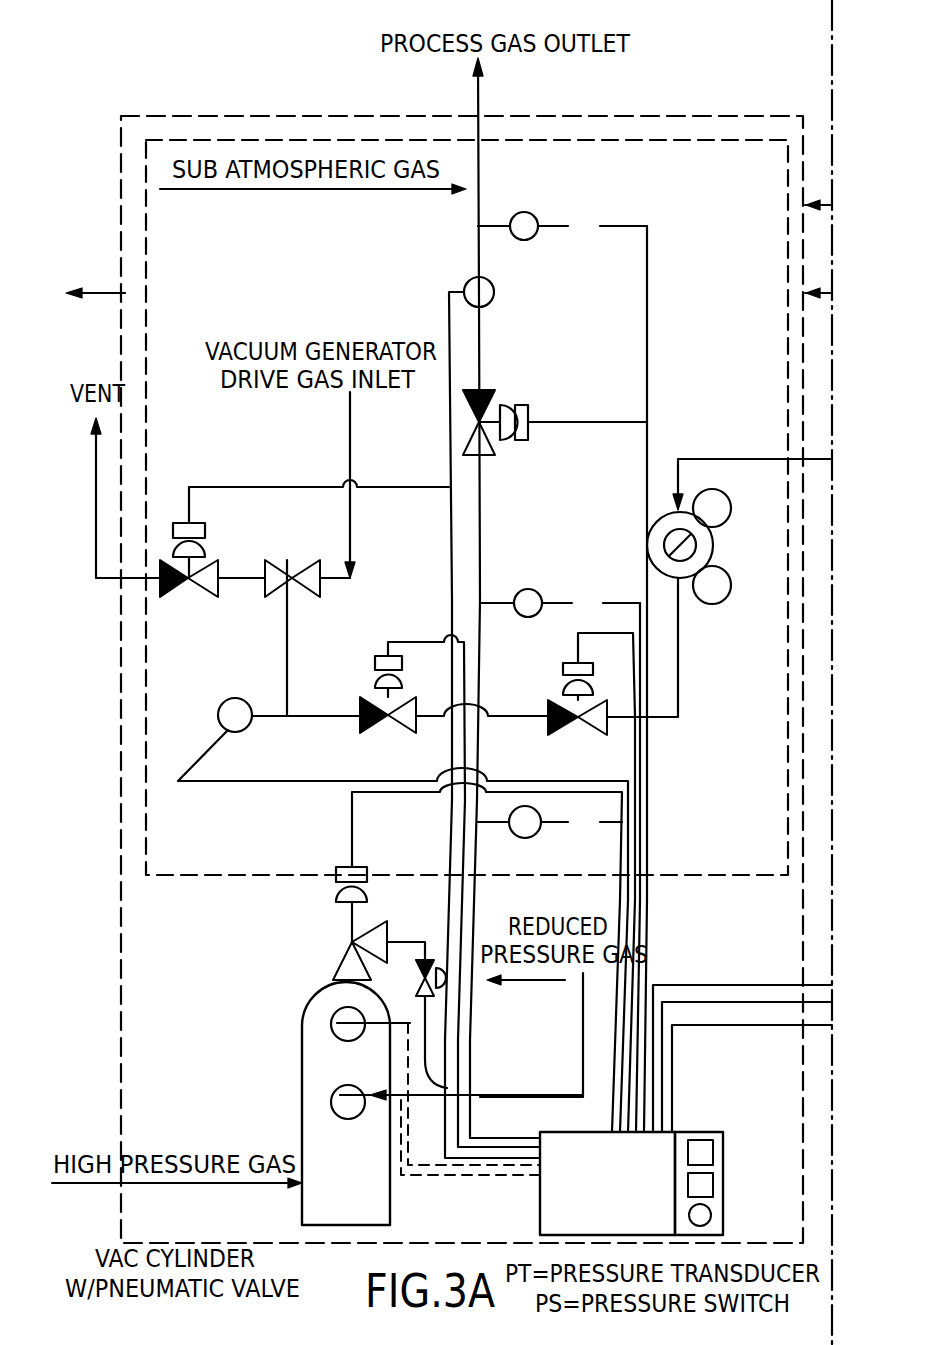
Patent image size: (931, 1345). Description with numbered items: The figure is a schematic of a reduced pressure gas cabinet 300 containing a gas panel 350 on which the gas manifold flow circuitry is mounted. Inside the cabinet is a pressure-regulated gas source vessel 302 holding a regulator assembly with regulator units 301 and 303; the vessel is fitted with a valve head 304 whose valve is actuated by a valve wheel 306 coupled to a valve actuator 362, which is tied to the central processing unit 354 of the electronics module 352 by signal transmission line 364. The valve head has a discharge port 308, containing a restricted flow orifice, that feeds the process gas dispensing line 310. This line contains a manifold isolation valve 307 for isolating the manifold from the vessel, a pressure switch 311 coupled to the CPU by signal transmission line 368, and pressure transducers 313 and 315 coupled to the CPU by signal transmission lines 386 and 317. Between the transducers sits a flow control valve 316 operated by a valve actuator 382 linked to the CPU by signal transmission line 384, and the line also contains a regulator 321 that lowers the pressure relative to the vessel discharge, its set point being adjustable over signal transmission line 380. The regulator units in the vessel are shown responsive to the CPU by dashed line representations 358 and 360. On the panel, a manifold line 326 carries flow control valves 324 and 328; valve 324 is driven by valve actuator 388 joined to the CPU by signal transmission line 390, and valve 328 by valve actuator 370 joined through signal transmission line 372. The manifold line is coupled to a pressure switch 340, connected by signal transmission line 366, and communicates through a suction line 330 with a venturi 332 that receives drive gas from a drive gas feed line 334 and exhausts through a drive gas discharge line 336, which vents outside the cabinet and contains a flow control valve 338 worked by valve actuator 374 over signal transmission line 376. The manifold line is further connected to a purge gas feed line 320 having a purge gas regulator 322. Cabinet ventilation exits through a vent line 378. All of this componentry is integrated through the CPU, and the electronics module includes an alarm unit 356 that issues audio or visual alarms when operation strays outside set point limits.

The gas cabinet 300 is at (690, 78).
The regulator unit 301 is at (335, 1100).
The gas source vessel 302 is at (298, 1202).
The regulator unit 303 is at (337, 1032).
The valve head 304 is at (333, 978).
The valve wheel 306 is at (337, 878).
The manifold isolation valve 307 is at (425, 958).
The discharge port 308 is at (388, 938).
The process gas dispensing line 310 is at (478, 102).
The pressure switch 311 is at (520, 838).
The pressure transducer 313 is at (540, 592).
The pressure transducer 315 is at (540, 214).
The flow control valve 316 is at (490, 392).
The signal transmission line 317 is at (618, 226).
The purge gas feed line 320 is at (757, 446).
The regulator 321 is at (492, 282).
The purge gas regulator 322 is at (652, 520).
The flow control valve 324 is at (590, 735).
The manifold line 326 is at (335, 716).
The flow control valve 328 is at (375, 678).
The suction line 330 is at (287, 640).
The venturi 332 is at (313, 558).
The drive gas feed line 334 is at (350, 475).
The drive gas discharge line 336 is at (228, 572).
The flow control valve 338 is at (177, 592).
The pressure switch 340 is at (243, 732).
The gas panel 350 is at (790, 292).
The electronics module 352 is at (686, 1110).
The central processing unit 354 is at (562, 1135).
The alarm unit 356 is at (723, 1180).
The dashed line representation 358 is at (478, 1170).
The dashed line representation 360 is at (447, 1173).
The valve actuator 362 is at (375, 852).
The signal transmission line 364 is at (380, 793).
The signal transmission line 366 is at (180, 778).
The signal transmission line 368 is at (550, 828).
The valve actuator 370 is at (383, 654).
The signal transmission line 372 is at (412, 676).
The valve actuator 374 is at (182, 517).
The signal transmission line 376 is at (228, 484).
The vent line 378 is at (110, 295).
The signal transmission line 380 is at (449, 296).
The valve actuator 382 is at (513, 460).
The signal transmission line 384 is at (548, 420).
The signal transmission line 386 is at (620, 602).
The valve actuator 388 is at (563, 684).
The signal transmission line 390 is at (565, 665).